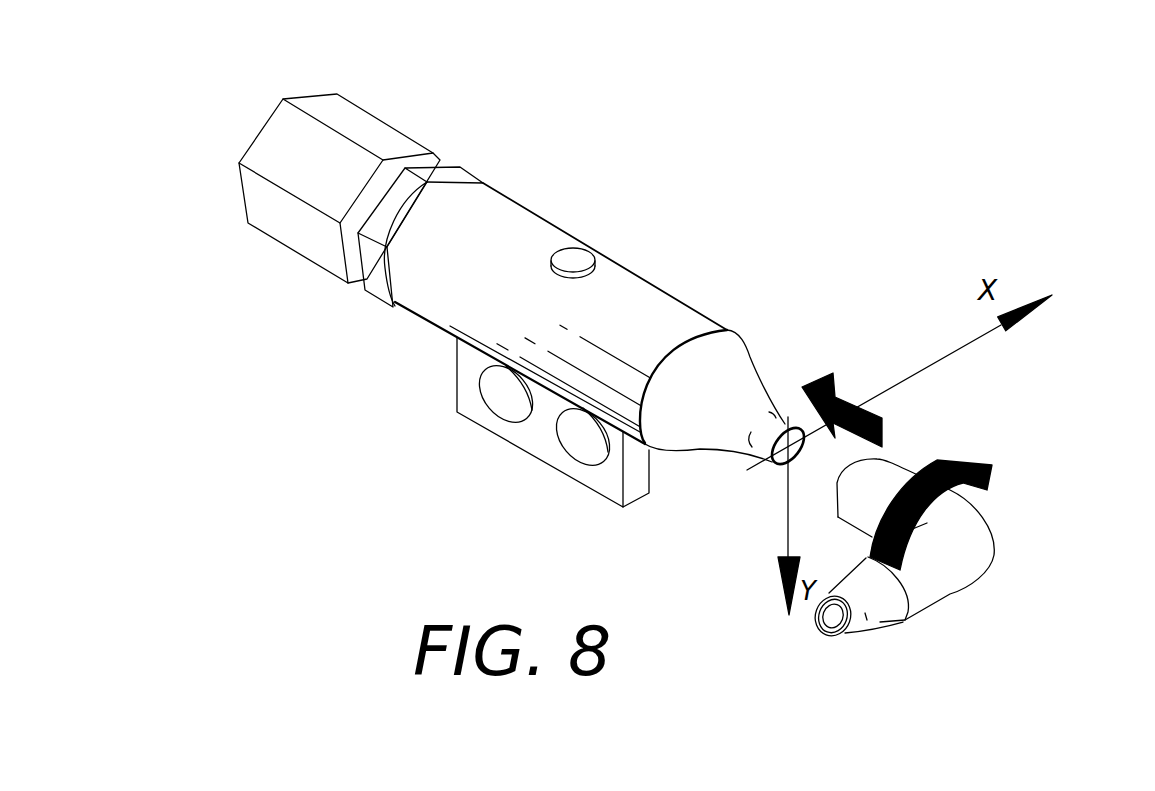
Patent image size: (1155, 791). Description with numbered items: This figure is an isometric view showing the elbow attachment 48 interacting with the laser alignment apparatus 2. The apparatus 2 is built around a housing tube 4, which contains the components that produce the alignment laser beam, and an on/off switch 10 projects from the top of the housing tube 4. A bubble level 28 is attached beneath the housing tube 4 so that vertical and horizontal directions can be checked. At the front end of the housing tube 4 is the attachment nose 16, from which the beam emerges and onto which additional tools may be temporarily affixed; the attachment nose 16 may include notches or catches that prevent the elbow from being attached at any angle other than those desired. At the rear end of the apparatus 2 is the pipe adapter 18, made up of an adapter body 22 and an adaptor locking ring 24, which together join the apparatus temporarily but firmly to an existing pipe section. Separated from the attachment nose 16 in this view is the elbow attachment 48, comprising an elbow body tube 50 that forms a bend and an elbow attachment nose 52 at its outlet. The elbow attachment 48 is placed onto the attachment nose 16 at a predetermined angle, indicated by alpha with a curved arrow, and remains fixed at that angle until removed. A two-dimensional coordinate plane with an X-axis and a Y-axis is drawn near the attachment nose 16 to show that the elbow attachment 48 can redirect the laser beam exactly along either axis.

The laser alignment apparatus 2 is at (727, 180).
The housing tube 4 is at (658, 285).
The on/off switch 10 is at (577, 258).
The attachment nose 16 is at (757, 370).
The pipe adapter 18 is at (453, 87).
The adapter body 22 is at (262, 235).
The adaptor locking ring 24 is at (378, 300).
The bubble level 28 is at (623, 507).
The elbow attachment 48 is at (1048, 468).
The elbow body tube 50 is at (957, 590).
The elbow attachment nose 52 is at (875, 620).